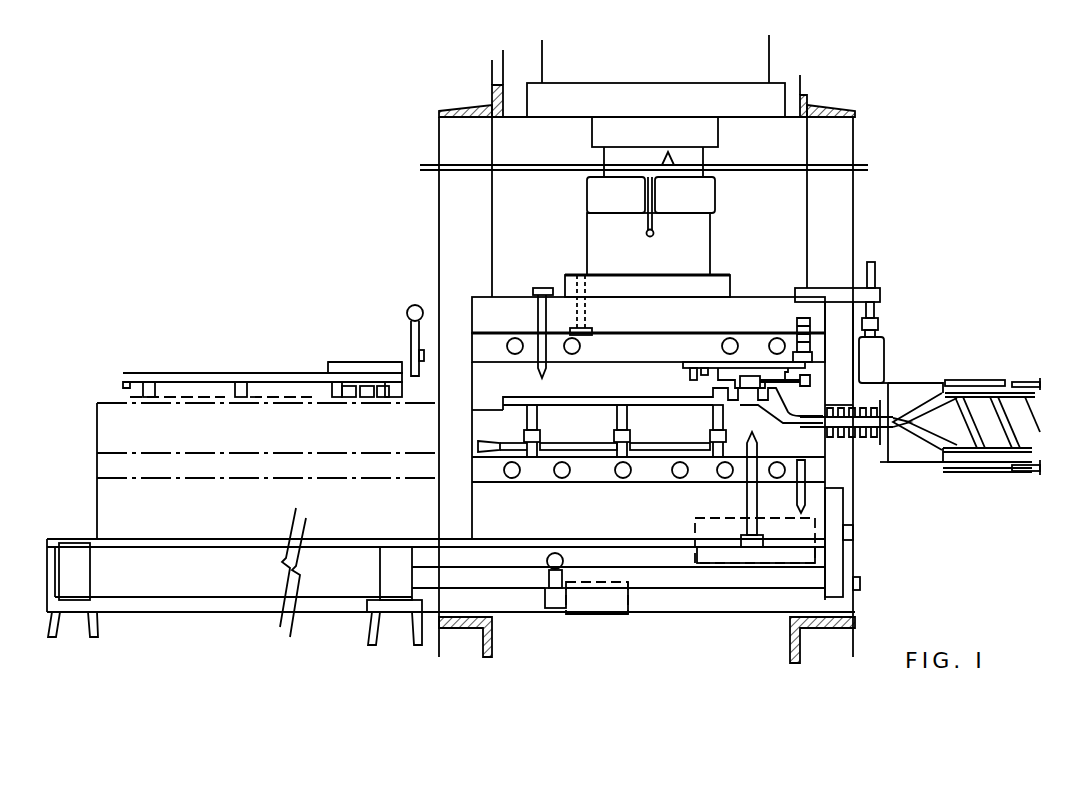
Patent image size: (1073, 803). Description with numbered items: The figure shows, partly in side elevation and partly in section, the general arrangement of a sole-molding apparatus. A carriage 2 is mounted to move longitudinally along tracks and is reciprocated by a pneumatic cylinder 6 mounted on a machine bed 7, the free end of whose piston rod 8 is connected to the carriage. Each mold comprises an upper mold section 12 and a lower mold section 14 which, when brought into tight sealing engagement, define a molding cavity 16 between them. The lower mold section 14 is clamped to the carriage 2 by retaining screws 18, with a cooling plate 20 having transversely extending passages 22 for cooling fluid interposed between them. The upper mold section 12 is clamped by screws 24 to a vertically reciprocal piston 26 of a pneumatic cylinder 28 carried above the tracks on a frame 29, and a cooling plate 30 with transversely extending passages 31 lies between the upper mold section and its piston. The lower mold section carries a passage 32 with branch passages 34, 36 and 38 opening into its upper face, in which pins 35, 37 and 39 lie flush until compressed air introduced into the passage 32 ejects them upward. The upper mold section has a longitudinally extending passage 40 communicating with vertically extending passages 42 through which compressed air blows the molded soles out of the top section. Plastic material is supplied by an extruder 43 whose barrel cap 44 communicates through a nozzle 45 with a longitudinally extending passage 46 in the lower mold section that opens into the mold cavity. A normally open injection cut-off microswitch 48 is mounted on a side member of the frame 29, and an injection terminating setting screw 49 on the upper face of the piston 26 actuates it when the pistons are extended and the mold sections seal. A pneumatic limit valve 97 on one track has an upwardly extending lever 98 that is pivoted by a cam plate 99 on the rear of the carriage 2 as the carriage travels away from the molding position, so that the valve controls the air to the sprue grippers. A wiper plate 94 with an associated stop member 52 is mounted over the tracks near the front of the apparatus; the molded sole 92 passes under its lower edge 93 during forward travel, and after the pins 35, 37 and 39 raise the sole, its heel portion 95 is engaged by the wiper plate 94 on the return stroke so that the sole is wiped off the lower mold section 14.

The carriage 2 is at (812, 513).
The pneumatic cylinder 6 is at (240, 582).
The machine bed 7 is at (100, 622).
The piston rod 8 is at (638, 578).
The upper mold section 12 is at (500, 373).
The lower mold section 14 is at (818, 448).
The molding cavity 16 is at (812, 400).
The retaining screws 18 is at (753, 527).
The cooling plate 20 is at (818, 475).
The transversely extending passages 22 is at (680, 478).
The screws 24 is at (540, 318).
The piston 26 is at (697, 244).
The pneumatic cylinder 28 is at (757, 52).
The frame 29 is at (853, 135).
The cooling plate 30 is at (488, 347).
The transversely extending passages 31 is at (843, 222).
The passages 32 is at (505, 450).
The branch passage 34 is at (536, 444).
The pin 35 is at (537, 417).
The branch passage 36 is at (640, 445).
The pin 37 is at (628, 419).
The branch passage 38 is at (727, 443).
The pin 39 is at (724, 422).
The longitudinally extending passage 40 is at (878, 358).
The vertically extending passages 42 is at (806, 352).
The extruder 43 is at (985, 383).
The barrel cap 44 is at (925, 455).
The nozzle 45 is at (885, 440).
The longitudinally extending passage 46 is at (912, 382).
The injection cut-off microswitch 48 is at (826, 405).
The injection terminating setting screw 49 is at (874, 278).
The stop member 52 is at (412, 345).
The molded sole 92 is at (246, 377).
The lower edge 93 is at (415, 378).
The wiper plate 94 is at (415, 353).
The heel portion 95 is at (357, 367).
The pneumatic limit valve 97 is at (552, 603).
The lever 98 is at (565, 562).
The plate 99 is at (730, 571).